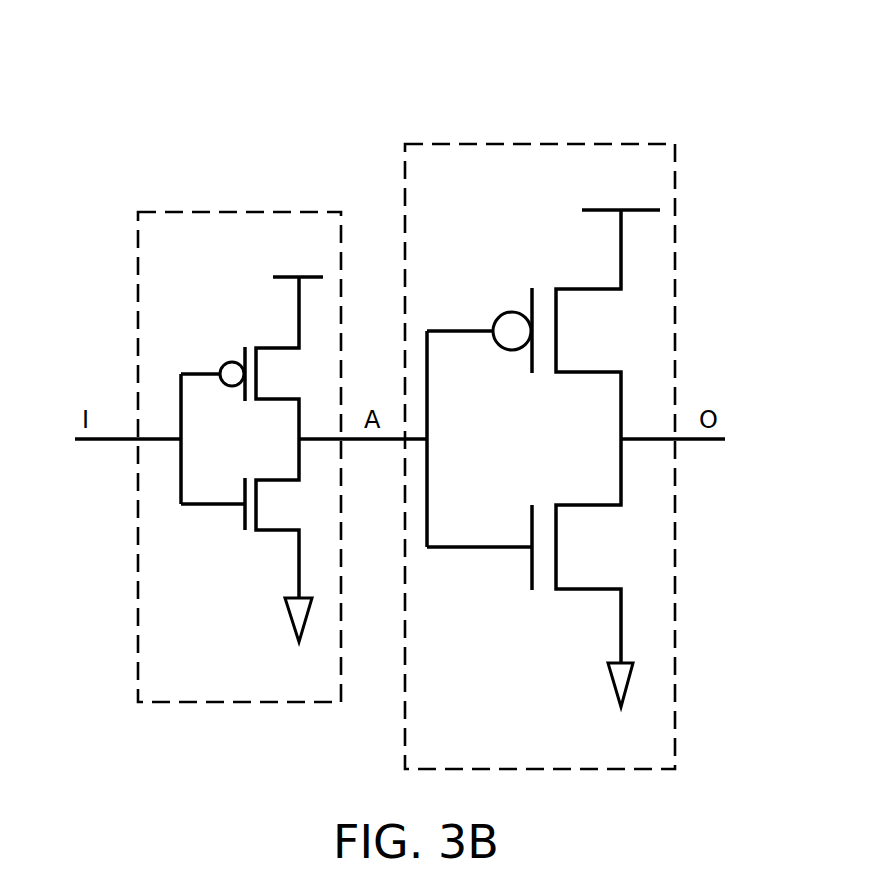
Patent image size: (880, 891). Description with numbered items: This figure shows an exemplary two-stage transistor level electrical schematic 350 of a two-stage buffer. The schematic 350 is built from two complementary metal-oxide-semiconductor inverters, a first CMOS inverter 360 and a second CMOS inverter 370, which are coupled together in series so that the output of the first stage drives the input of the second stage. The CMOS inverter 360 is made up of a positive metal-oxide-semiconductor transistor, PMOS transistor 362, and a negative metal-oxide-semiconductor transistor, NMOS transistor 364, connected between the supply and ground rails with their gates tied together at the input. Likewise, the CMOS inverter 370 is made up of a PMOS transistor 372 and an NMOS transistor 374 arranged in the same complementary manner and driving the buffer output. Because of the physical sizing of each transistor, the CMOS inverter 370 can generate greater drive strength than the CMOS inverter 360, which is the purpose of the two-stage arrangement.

The two-stage transistor level electrical schematic 350 is at (571, 98).
The CMOS inverter 360 is at (200, 693).
The PMOS transistor 362 is at (270, 347).
The NMOS transistor 364 is at (273, 533).
The CMOS inverter 370 is at (467, 761).
The PMOS transistor 372 is at (573, 287).
The NMOS transistor 374 is at (573, 592).